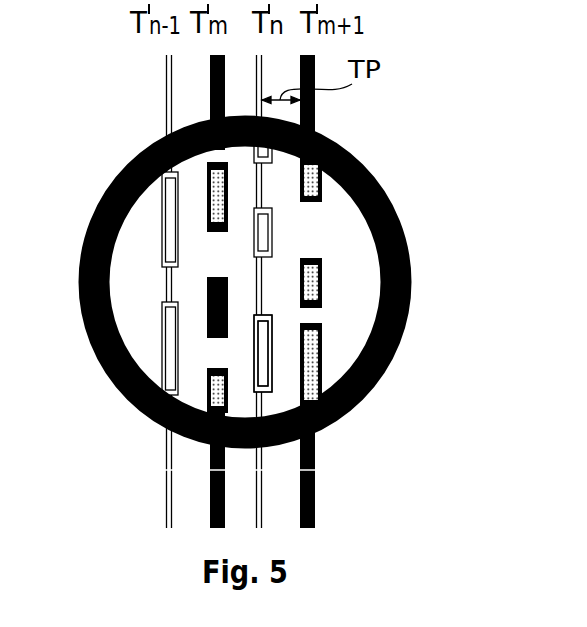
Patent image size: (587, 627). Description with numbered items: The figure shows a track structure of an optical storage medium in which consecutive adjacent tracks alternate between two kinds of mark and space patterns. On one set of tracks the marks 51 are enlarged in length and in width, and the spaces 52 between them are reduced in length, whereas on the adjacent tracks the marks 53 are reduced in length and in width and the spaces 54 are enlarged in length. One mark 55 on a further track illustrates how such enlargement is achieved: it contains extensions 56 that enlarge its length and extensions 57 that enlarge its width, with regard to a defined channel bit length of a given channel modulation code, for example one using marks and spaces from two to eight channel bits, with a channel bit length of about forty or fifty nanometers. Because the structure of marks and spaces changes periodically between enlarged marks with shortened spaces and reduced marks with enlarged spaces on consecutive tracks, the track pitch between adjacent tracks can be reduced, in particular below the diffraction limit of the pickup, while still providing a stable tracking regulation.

The marks 51 is at (207, 302).
The spaces 52 is at (212, 253).
The marks 53 is at (259, 237).
The spaces 54 is at (263, 282).
The mark 55 is at (315, 285).
The extensions 56 is at (323, 307).
The extensions 57 is at (320, 268).